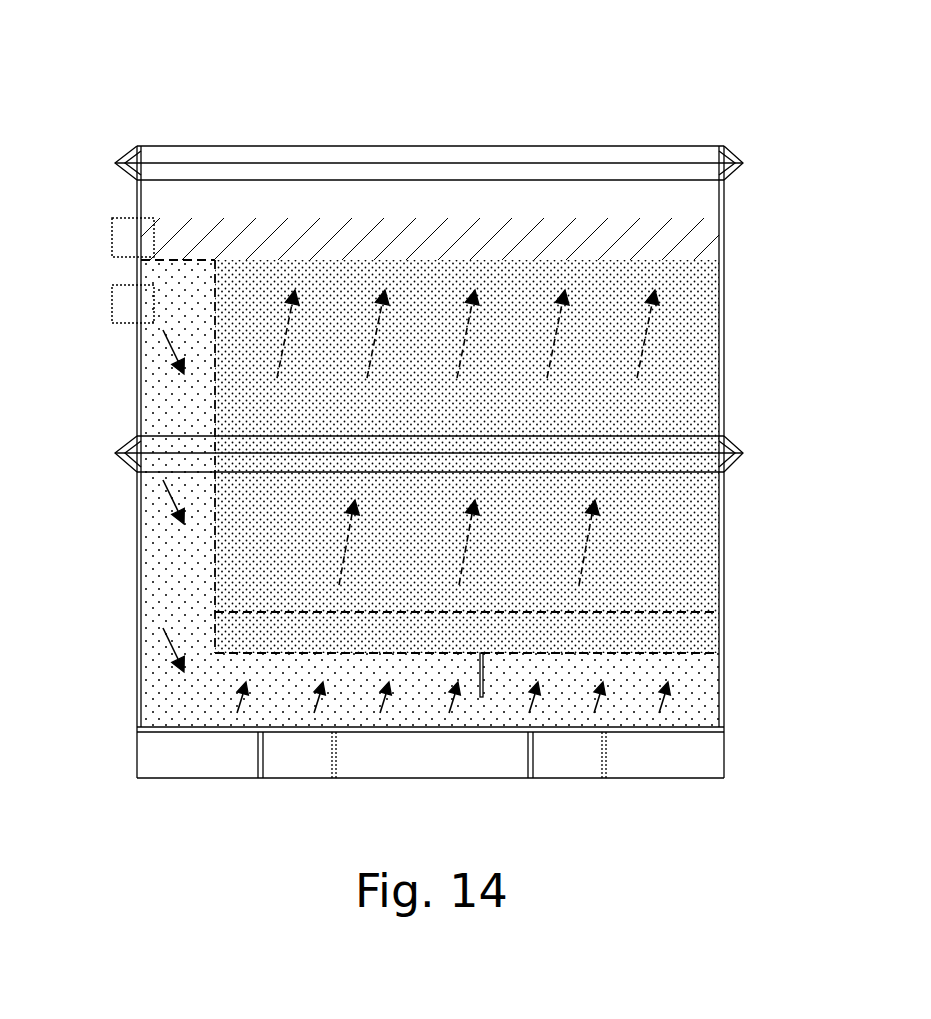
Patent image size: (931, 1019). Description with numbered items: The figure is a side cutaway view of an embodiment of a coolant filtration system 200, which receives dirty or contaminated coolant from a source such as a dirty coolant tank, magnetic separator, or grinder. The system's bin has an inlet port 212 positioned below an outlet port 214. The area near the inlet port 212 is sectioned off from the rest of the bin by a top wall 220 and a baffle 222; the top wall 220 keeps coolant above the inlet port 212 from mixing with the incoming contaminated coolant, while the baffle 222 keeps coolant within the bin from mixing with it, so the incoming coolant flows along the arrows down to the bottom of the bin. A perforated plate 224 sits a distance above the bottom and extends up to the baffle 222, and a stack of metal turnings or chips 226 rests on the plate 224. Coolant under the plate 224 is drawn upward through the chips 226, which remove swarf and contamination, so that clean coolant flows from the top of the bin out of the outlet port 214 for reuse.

The coolant filtration system 200 is at (400, 80).
The inlet port 212 is at (113, 302).
The outlet port 214 is at (118, 233).
The top wall 220 is at (185, 260).
The baffle 222 is at (215, 572).
The plate 224 is at (305, 653).
The chips 226 is at (682, 558).